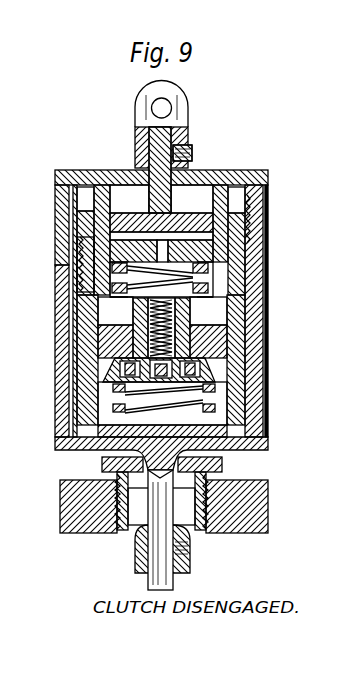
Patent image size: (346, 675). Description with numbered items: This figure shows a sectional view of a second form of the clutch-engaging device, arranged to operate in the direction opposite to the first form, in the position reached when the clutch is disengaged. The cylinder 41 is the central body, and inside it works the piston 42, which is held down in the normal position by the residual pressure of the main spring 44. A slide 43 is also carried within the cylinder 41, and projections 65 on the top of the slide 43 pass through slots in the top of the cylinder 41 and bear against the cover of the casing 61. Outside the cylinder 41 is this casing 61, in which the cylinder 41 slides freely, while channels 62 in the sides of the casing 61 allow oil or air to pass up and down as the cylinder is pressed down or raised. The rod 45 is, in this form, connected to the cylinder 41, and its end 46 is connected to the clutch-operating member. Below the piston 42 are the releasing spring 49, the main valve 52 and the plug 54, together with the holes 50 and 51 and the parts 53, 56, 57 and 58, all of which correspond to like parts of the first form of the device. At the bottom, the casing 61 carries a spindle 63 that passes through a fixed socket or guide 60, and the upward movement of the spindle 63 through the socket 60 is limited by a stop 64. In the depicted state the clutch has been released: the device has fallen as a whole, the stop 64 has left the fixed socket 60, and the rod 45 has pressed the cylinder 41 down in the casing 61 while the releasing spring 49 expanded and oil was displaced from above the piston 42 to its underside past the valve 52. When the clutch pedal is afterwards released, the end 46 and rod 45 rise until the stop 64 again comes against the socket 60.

The cylinder 41 is at (92, 332).
The piston 42 is at (105, 380).
The slide 43 is at (95, 242).
The main spring 44 is at (190, 278).
The rod 45 is at (163, 152).
The end connected to the clutch-operating member 46 is at (145, 117).
The releasing spring 49 is at (130, 393).
The hole 50 is at (160, 248).
The hole 51 is at (125, 318).
The main valve 52 is at (210, 380).
The part corresponding to part 13 53 is at (190, 333).
The plug 54 is at (165, 362).
The part corresponding to part 16 56 is at (180, 323).
The part corresponding to part 17 57 is at (250, 290).
The part corresponding to part 18 58 is at (112, 282).
The fixed socket or guide 60 is at (115, 523).
The casing 61 is at (60, 443).
The channels 62 is at (72, 360).
The spindle 63 is at (162, 490).
The stop 64 is at (190, 538).
The projections 65 is at (98, 203).